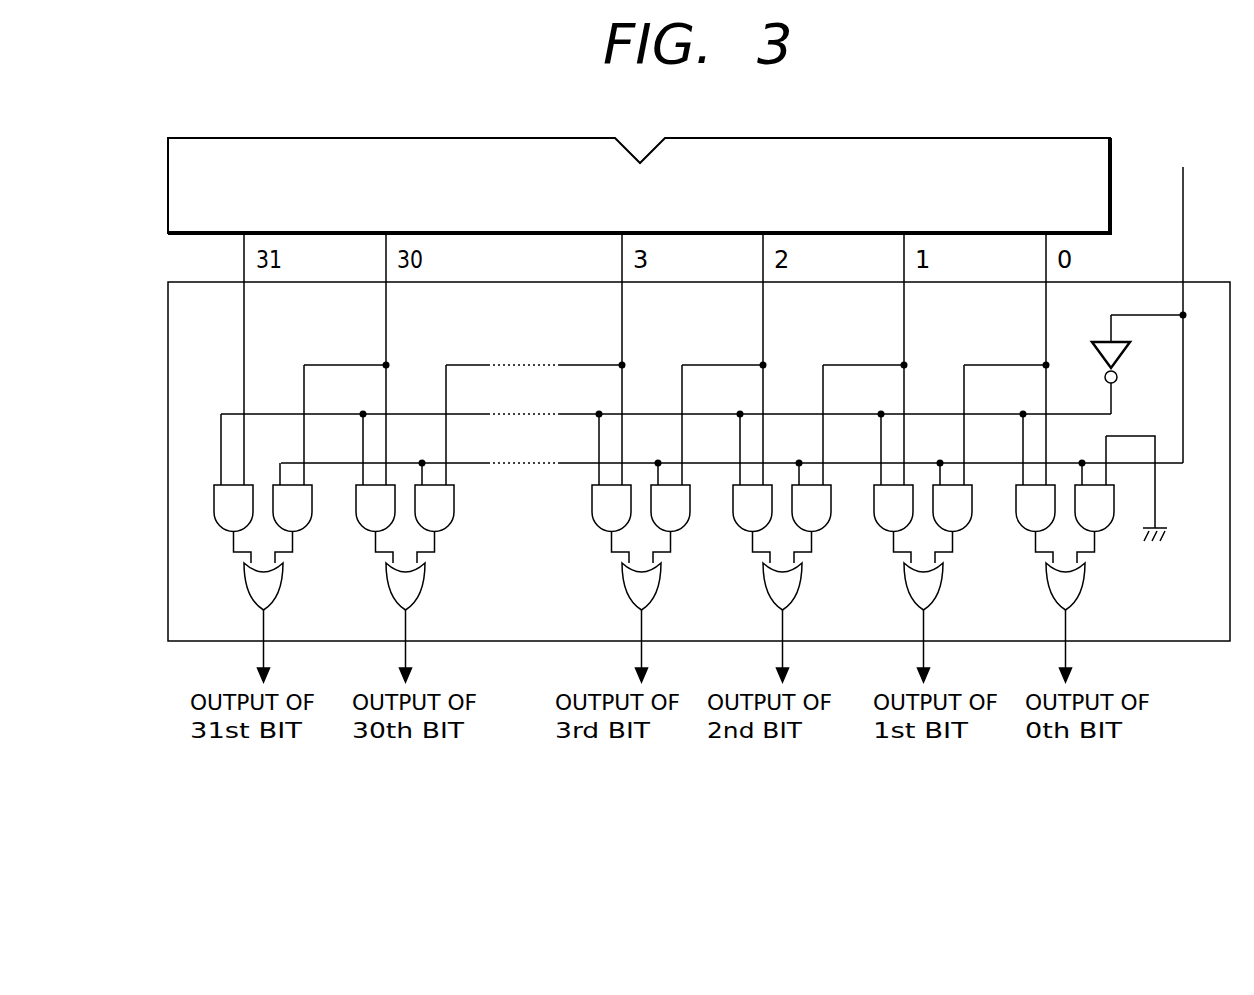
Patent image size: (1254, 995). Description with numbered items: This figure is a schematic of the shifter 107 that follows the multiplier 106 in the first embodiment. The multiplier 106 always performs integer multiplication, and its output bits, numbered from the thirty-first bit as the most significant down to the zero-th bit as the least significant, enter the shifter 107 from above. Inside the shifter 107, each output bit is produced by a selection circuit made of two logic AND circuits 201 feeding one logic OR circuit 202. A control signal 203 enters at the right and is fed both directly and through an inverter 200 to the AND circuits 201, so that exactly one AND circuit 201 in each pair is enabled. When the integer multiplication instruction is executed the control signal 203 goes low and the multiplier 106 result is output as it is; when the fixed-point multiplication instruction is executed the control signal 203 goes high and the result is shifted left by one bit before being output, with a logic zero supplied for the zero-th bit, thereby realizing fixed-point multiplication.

The multiplier 106 is at (1055, 137).
The shifter 107 is at (507, 281).
The inverter 200 is at (1122, 352).
The logic AND circuit 201 is at (433, 516).
The logic OR circuit 202 is at (433, 593).
The control signal 203 is at (1183, 218).